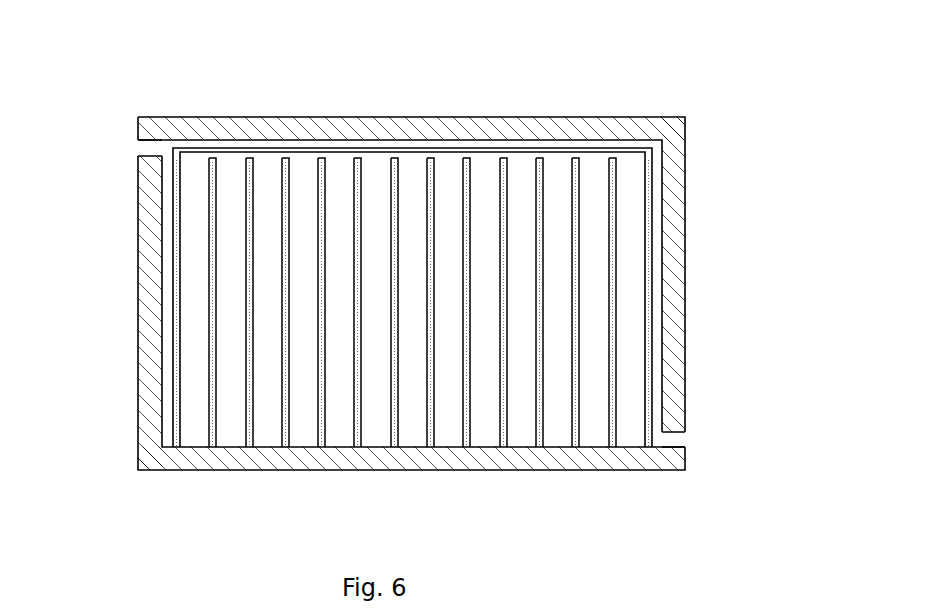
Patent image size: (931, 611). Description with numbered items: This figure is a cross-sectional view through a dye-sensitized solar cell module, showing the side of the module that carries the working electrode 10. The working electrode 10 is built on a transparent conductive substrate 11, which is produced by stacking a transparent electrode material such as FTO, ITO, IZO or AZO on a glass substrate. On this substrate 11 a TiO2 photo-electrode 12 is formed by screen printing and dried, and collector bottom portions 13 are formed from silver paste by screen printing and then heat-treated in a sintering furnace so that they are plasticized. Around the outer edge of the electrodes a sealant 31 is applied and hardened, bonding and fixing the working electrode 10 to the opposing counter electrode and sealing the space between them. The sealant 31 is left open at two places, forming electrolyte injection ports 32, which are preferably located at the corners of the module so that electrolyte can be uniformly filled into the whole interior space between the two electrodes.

The working electrode 10 is at (677, 113).
The transparent conductive substrate 11 is at (375, 146).
The TiO2 photo-electrode 12 is at (303, 413).
The bottom portion 13 is at (247, 405).
The sealant 31 is at (490, 130).
The electrolyte injection port 32 is at (153, 148).